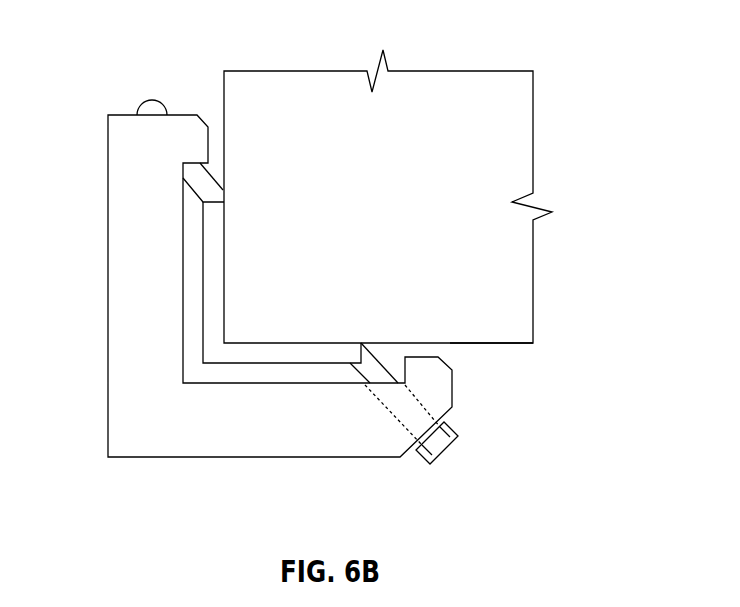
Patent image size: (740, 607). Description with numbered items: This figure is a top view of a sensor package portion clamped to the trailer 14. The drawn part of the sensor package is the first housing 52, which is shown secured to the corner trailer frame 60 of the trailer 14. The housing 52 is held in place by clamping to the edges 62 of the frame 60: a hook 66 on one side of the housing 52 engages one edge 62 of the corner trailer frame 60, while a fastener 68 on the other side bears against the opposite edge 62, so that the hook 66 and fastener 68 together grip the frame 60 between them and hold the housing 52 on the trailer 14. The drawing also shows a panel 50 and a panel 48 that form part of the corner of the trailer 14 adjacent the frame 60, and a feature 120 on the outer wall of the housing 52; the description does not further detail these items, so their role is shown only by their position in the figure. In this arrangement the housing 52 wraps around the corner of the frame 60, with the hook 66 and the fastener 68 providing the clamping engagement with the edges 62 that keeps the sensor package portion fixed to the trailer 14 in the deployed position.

The trailer 14 is at (389, 172).
The panel 48 is at (508, 345).
The first member 50 is at (223, 92).
The first housing 52 is at (132, 447).
The corner trailer frame 60 is at (242, 353).
The edges 62 is at (210, 205).
The hook 66 is at (202, 182).
The fastener 68 is at (355, 363).
The locating feature 120 is at (152, 98).